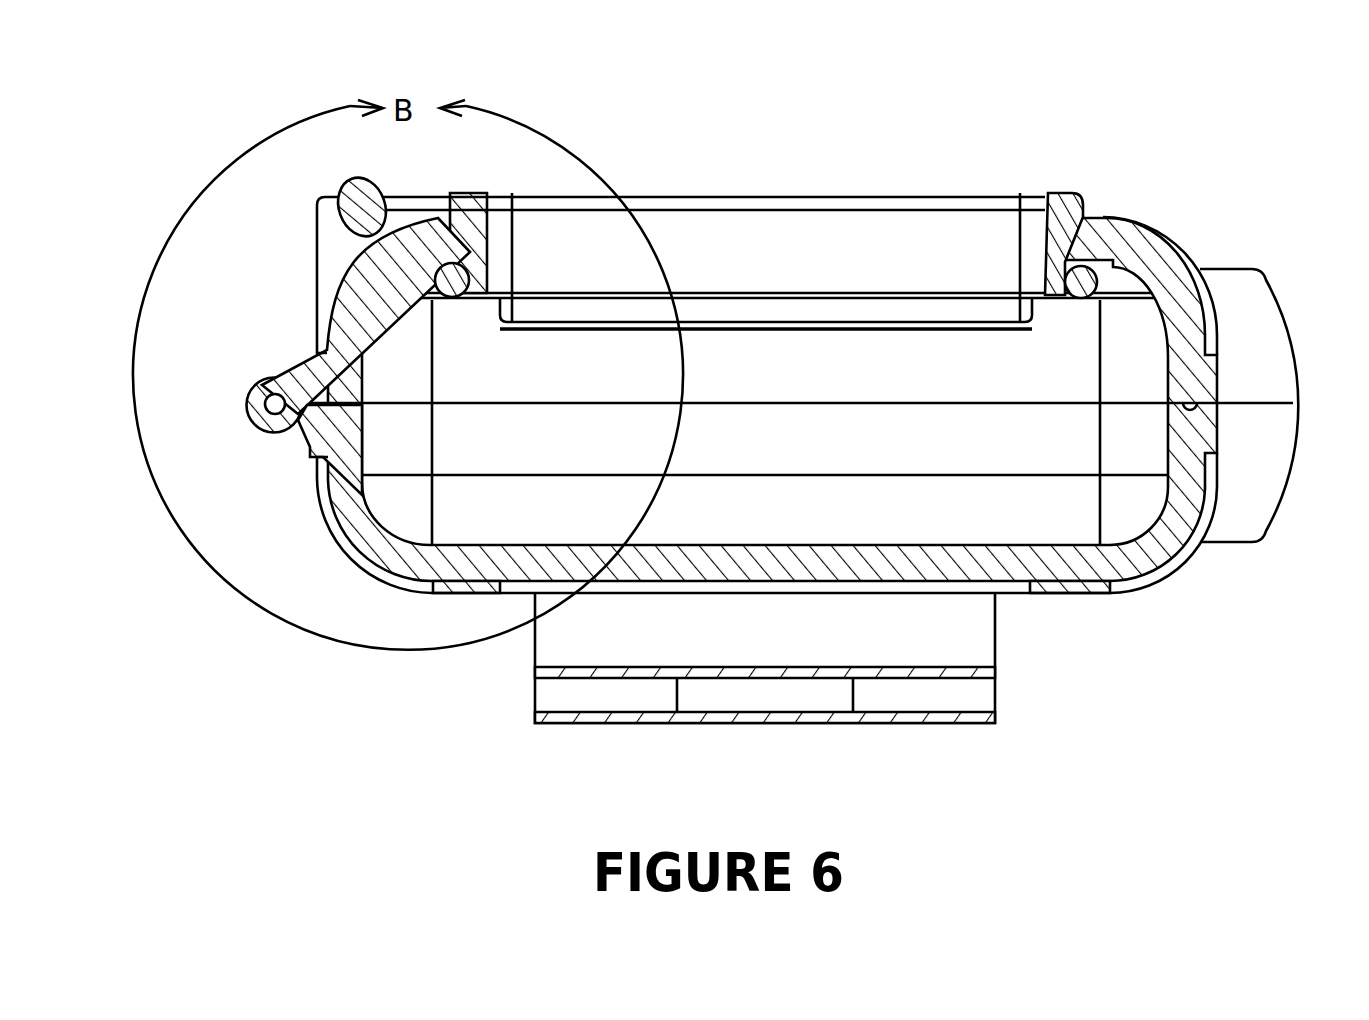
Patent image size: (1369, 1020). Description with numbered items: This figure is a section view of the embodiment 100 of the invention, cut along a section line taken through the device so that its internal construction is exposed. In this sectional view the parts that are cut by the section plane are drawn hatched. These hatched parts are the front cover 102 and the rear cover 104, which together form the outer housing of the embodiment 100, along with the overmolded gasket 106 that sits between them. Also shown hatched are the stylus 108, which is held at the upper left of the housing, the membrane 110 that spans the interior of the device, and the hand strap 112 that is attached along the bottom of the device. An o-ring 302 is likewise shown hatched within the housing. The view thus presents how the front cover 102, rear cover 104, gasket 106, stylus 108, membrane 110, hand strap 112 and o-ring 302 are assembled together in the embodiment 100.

The embodiment 100 is at (1113, 662).
The front cover 102 is at (1152, 263).
The rear cover 104 is at (1147, 547).
The overmolded gasket 106 is at (1060, 208).
The stylus 108 is at (347, 188).
The membrane 110 is at (540, 310).
The hand strap 112 is at (560, 722).
The o-ring 302 is at (468, 290).